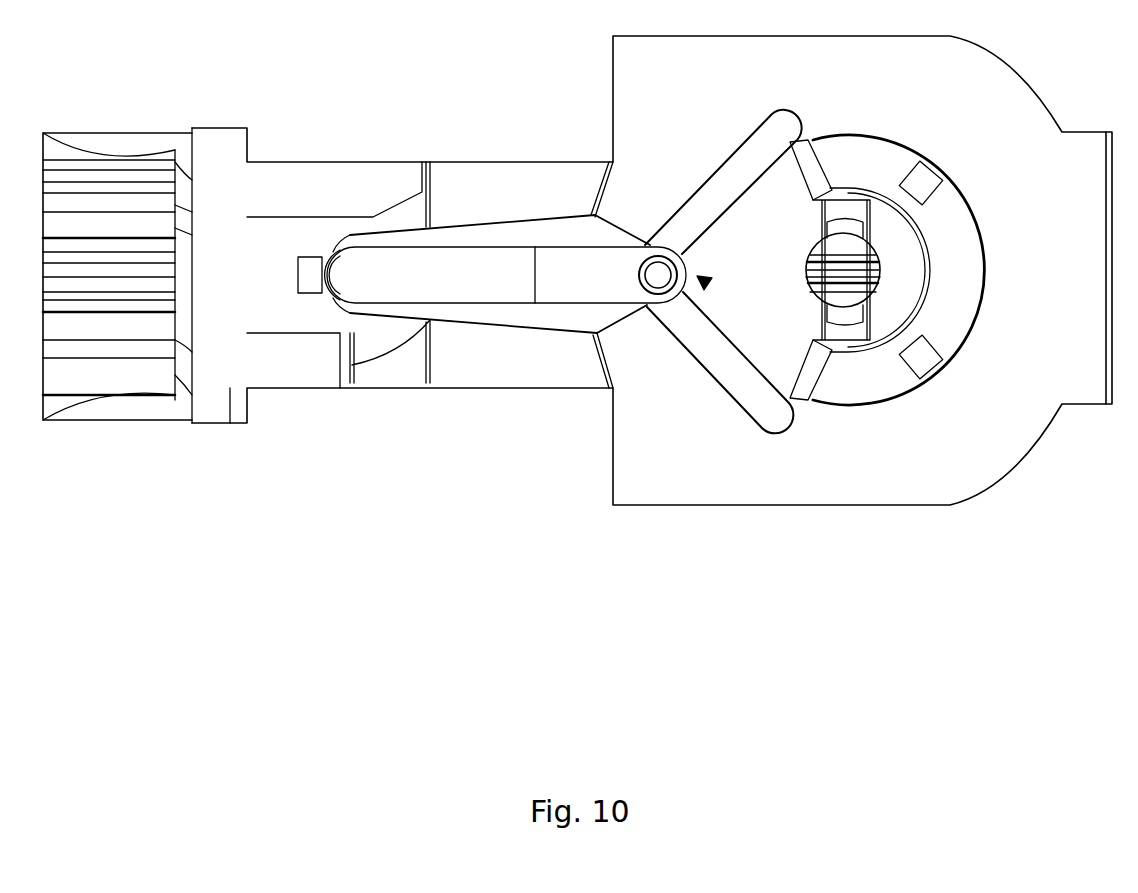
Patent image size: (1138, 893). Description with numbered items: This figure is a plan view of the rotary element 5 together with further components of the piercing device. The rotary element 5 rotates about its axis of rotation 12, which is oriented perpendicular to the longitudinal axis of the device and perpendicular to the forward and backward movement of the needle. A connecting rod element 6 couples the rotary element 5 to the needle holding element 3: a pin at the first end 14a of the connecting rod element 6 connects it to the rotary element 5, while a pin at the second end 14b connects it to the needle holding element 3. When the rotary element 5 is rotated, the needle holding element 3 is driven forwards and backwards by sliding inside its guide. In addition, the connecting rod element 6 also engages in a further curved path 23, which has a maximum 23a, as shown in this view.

The electric motor 3 is at (117, 372).
The first housing part 14a is at (628, 267).
The second housing part 14b is at (342, 350).
The lever arm 6 is at (505, 330).
The spring clip 23 is at (707, 383).
The pivot point of spring clip 23a is at (706, 284).
The rotary body 5 is at (848, 377).
The shaft 12 is at (873, 297).